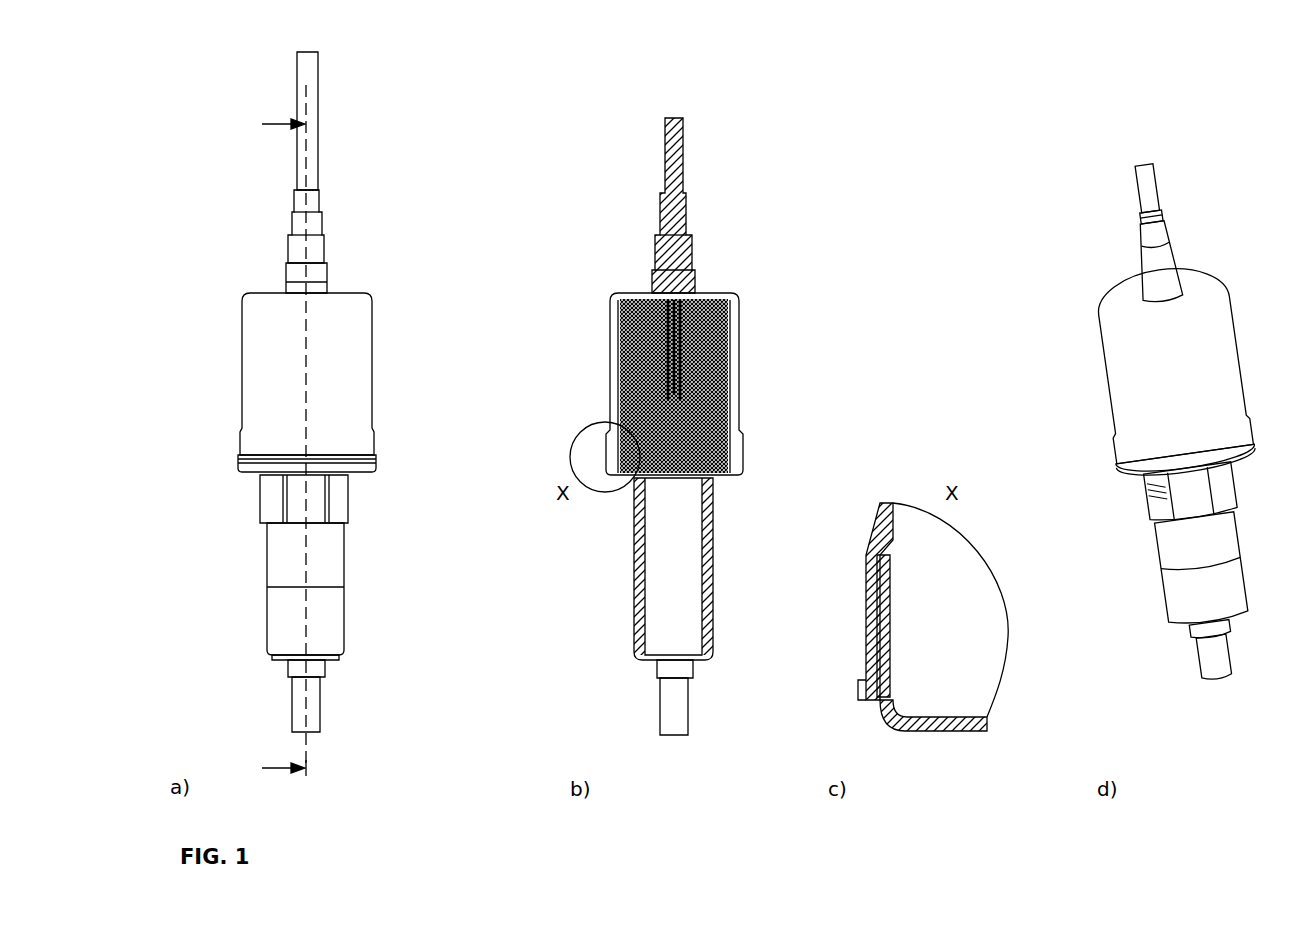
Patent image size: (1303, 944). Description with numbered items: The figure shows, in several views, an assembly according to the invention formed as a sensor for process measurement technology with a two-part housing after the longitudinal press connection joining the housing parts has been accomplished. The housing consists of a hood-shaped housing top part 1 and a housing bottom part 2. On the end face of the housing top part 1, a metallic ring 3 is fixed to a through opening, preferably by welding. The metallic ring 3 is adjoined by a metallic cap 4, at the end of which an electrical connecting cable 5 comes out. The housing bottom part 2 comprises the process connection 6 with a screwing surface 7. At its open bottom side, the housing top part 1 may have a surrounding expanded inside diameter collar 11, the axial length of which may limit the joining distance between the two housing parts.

The housing top part 1 is at (244, 361).
The housing bottom part 2 is at (253, 470).
The metallic ring 3 is at (328, 285).
The metallic cap 4 is at (324, 252).
The electrical connecting cable 5 is at (318, 147).
The process connection 6 is at (345, 571).
The screwing surface 7 is at (350, 505).
The surrounding expanded inside diameter collar 11 is at (866, 590).